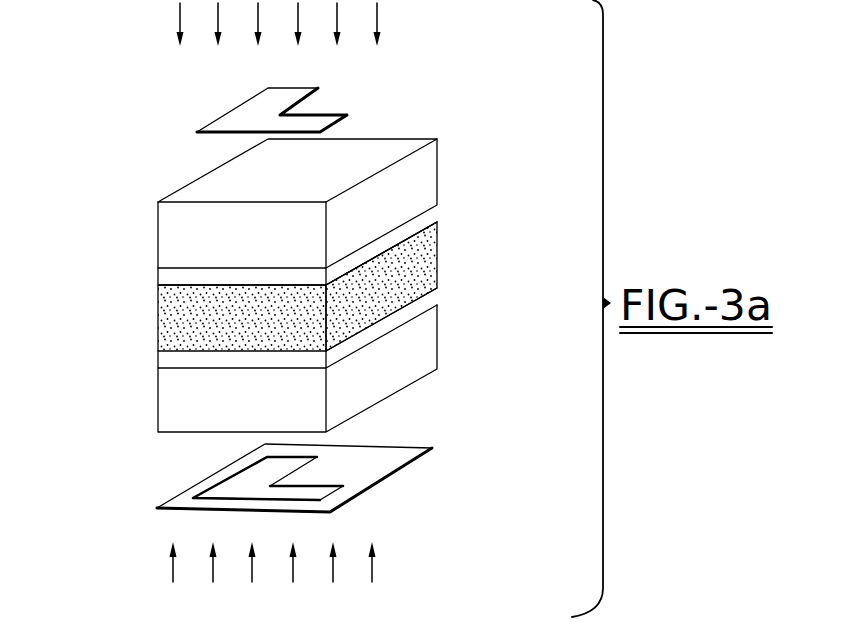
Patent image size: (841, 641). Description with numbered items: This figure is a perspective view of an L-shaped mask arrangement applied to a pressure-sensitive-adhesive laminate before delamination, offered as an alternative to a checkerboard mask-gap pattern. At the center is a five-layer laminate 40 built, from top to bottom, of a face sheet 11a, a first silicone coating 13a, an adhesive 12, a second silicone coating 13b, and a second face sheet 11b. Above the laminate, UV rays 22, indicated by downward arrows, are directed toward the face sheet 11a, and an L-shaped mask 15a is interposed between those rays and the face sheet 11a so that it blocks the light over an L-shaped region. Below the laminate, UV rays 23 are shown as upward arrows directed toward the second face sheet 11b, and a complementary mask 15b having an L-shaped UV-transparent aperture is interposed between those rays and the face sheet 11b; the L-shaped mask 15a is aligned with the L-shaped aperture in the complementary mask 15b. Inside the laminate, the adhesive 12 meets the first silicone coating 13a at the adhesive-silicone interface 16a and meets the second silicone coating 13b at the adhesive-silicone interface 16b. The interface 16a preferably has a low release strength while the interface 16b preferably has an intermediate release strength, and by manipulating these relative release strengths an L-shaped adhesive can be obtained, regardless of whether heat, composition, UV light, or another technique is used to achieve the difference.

The face sheet 11a is at (160, 235).
The second face sheet 11b is at (160, 402).
The adhesive 12 is at (160, 317).
The first silicone coating 13a is at (160, 278).
The second silicone coating 13b is at (160, 361).
The L-shaped mask 15a is at (227, 112).
The complementary mask 15b is at (198, 488).
The adhesive-silicone interface 16a is at (424, 231).
The adhesive-silicone interface 16b is at (421, 298).
The UV rays 22 is at (172, 24).
The UV rays 23 is at (163, 559).
The five-layer laminate 40 is at (266, 244).